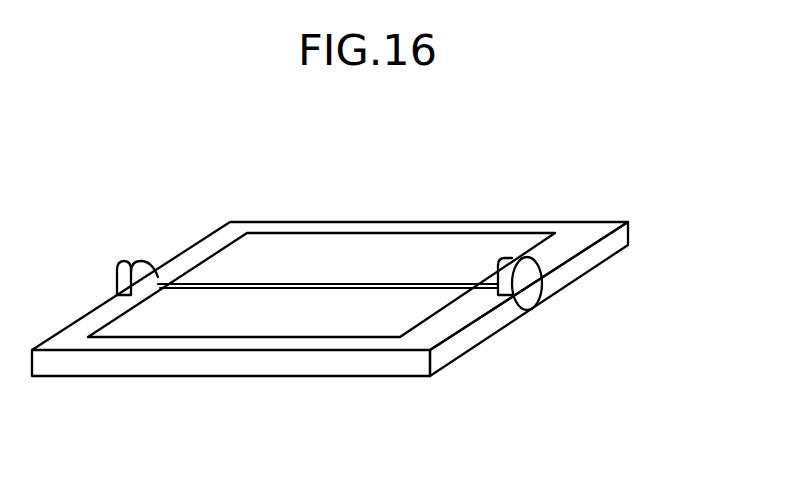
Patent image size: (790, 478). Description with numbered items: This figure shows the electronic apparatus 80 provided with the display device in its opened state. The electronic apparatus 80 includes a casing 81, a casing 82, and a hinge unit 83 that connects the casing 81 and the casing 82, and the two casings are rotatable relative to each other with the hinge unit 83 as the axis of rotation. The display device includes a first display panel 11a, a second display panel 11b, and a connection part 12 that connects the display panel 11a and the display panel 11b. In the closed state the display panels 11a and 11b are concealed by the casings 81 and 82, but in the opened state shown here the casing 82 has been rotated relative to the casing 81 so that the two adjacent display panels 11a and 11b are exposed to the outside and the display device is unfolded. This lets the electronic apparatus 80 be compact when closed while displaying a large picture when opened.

The electronic apparatus 80 is at (655, 174).
The casing 81 is at (478, 333).
The casing 82 is at (620, 237).
The hinge unit 83 is at (133, 263).
The connection part 12 is at (323, 283).
The display panel 11a is at (435, 250).
The display panel 11b is at (325, 325).